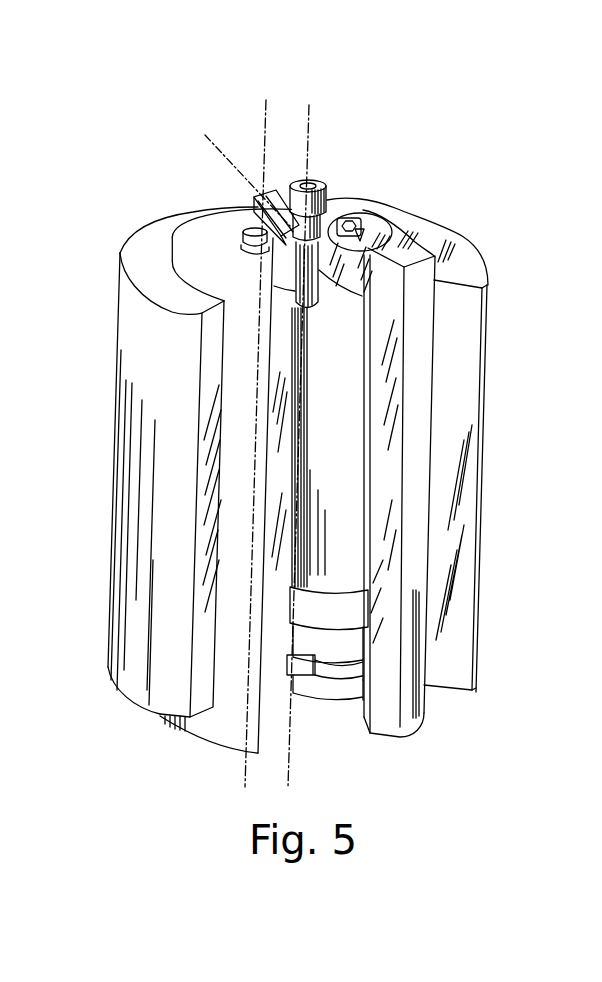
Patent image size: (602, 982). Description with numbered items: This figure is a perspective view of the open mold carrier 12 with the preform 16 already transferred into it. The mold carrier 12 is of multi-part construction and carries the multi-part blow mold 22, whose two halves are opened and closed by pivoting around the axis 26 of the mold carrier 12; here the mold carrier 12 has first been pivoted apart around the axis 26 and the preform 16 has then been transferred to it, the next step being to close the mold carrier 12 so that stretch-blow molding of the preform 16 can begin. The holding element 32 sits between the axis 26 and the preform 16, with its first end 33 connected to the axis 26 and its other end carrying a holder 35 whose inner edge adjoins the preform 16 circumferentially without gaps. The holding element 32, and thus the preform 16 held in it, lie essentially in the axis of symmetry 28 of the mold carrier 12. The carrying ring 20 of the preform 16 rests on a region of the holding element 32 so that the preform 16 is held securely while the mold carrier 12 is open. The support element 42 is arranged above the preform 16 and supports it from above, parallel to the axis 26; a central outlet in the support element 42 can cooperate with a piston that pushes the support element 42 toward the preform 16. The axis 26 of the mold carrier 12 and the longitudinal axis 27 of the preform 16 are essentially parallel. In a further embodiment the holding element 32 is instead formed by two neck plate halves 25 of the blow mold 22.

The mold carrier 12 is at (386, 138).
The preform 16 is at (346, 236).
The carrying ring 20 is at (350, 232).
The blow mold 22 is at (352, 547).
The neck plate halves 25 is at (200, 210).
The axis 26 is at (266, 122).
The longitudinal axis 27 is at (308, 119).
The axis of symmetry 28 is at (220, 145).
The holding element 32 is at (275, 187).
The first end 33 is at (266, 198).
The holder 35 is at (252, 232).
The support element 42 is at (333, 222).